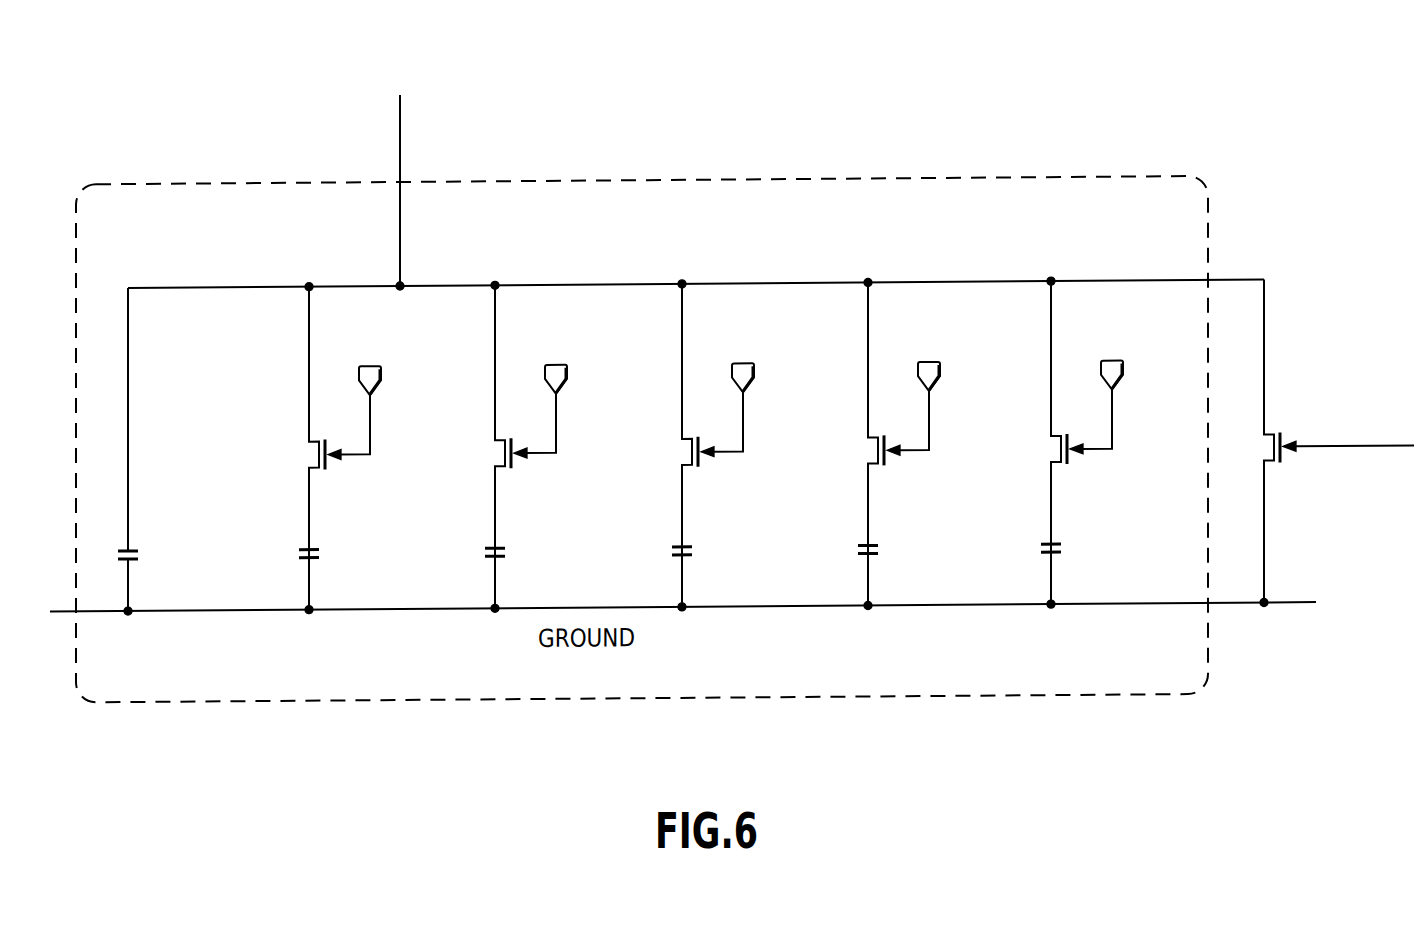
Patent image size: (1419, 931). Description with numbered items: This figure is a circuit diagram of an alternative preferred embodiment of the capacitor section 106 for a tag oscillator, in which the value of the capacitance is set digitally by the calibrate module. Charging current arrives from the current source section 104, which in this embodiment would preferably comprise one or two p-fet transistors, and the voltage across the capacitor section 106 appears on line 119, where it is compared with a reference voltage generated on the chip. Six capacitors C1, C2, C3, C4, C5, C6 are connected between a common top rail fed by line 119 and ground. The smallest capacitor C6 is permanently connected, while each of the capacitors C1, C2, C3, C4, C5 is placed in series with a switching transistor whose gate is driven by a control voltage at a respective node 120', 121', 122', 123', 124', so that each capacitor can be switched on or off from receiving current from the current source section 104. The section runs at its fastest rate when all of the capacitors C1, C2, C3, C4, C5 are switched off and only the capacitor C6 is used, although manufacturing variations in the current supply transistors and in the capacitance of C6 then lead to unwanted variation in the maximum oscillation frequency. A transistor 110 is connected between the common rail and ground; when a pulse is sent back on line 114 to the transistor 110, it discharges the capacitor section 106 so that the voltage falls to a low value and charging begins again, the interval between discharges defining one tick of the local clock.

The capacitor section 106 is at (740, 184).
The current source section 104 is at (413, 59).
The line 119 is at (400, 245).
The transistor 110 is at (1282, 466).
The line 114 is at (1334, 455).
The node 120' is at (1121, 409).
The node 121' is at (938, 410).
The node 122' is at (752, 412).
The node 123' is at (565, 413).
The node 124' is at (379, 415).
The capacitor C1 is at (1066, 553).
The capacitor C2 is at (883, 554).
The capacitor C3 is at (697, 556).
The capacitor C4 is at (510, 557).
The capacitor C5 is at (324, 558).
The capacitor C6 is at (141, 451).